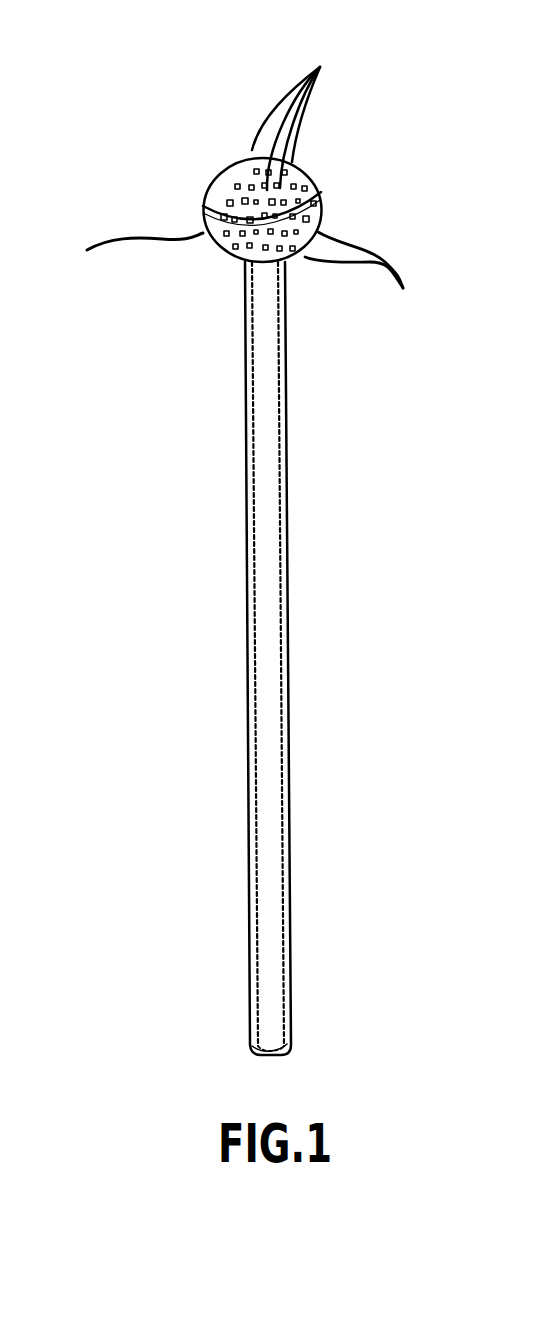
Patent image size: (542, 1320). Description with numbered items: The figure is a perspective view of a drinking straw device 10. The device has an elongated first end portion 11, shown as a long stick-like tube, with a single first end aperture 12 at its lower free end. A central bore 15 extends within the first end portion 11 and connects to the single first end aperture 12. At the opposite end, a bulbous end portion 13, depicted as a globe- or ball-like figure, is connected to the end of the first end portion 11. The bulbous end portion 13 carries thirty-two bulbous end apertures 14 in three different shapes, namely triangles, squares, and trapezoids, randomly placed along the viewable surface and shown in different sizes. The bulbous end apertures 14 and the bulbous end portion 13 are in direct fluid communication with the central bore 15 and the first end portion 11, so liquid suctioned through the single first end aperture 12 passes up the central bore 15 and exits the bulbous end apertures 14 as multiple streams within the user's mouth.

The drinking straw device 10 is at (185, 138).
The first end portion 11 is at (292, 838).
The single first end aperture 12 is at (276, 1056).
The bulbous end portion 13 is at (323, 188).
The bulbous end apertures 14 is at (220, 180).
The central bore 15 is at (292, 762).